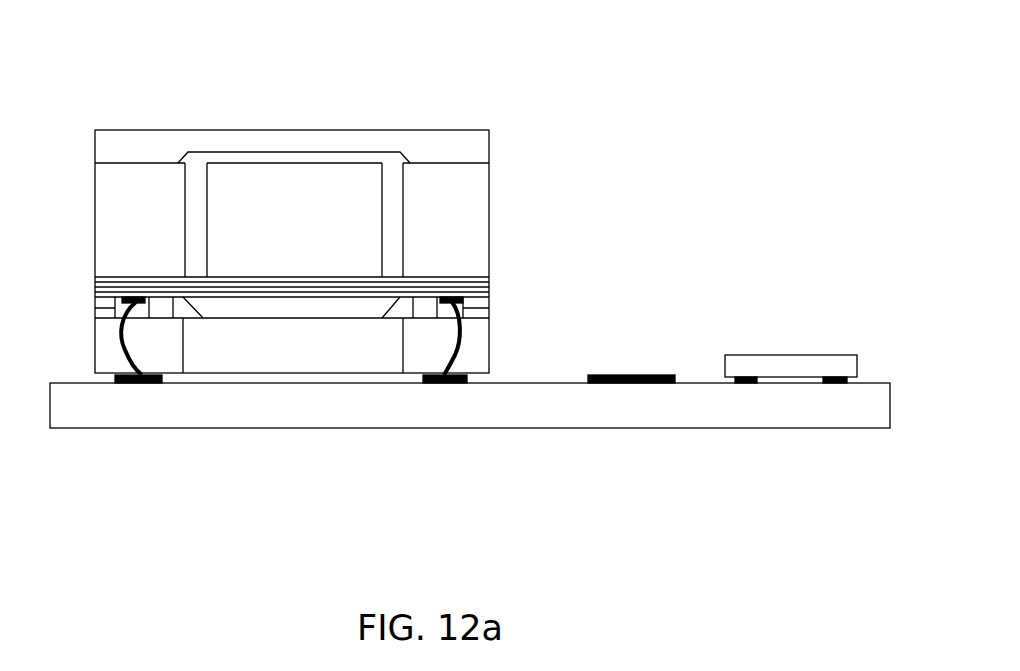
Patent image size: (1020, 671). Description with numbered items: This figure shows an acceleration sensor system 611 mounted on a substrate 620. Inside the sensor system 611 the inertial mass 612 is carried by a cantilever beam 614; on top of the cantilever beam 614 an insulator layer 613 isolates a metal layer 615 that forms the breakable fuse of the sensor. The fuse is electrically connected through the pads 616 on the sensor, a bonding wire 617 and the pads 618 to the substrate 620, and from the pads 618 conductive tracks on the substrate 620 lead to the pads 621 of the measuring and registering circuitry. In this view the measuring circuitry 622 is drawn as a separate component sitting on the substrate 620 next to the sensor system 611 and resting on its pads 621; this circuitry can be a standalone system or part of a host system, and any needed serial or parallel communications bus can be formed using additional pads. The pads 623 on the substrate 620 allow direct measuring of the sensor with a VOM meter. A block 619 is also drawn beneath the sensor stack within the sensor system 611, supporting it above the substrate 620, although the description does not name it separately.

The sensor system 611 is at (307, 118).
The inertial mass 612 is at (305, 195).
The insulator layer 613 is at (422, 277).
The cantilever beam 614 is at (452, 282).
The metal layer 615 is at (478, 287).
The pads 616 is at (467, 302).
The bonding wire 617 is at (460, 338).
The pads 618 is at (425, 383).
The support block 619 is at (227, 345).
The substrate 620 is at (98, 408).
The pads 621 is at (743, 377).
The measuring circuitry 622 is at (790, 367).
The pads 623 is at (637, 383).